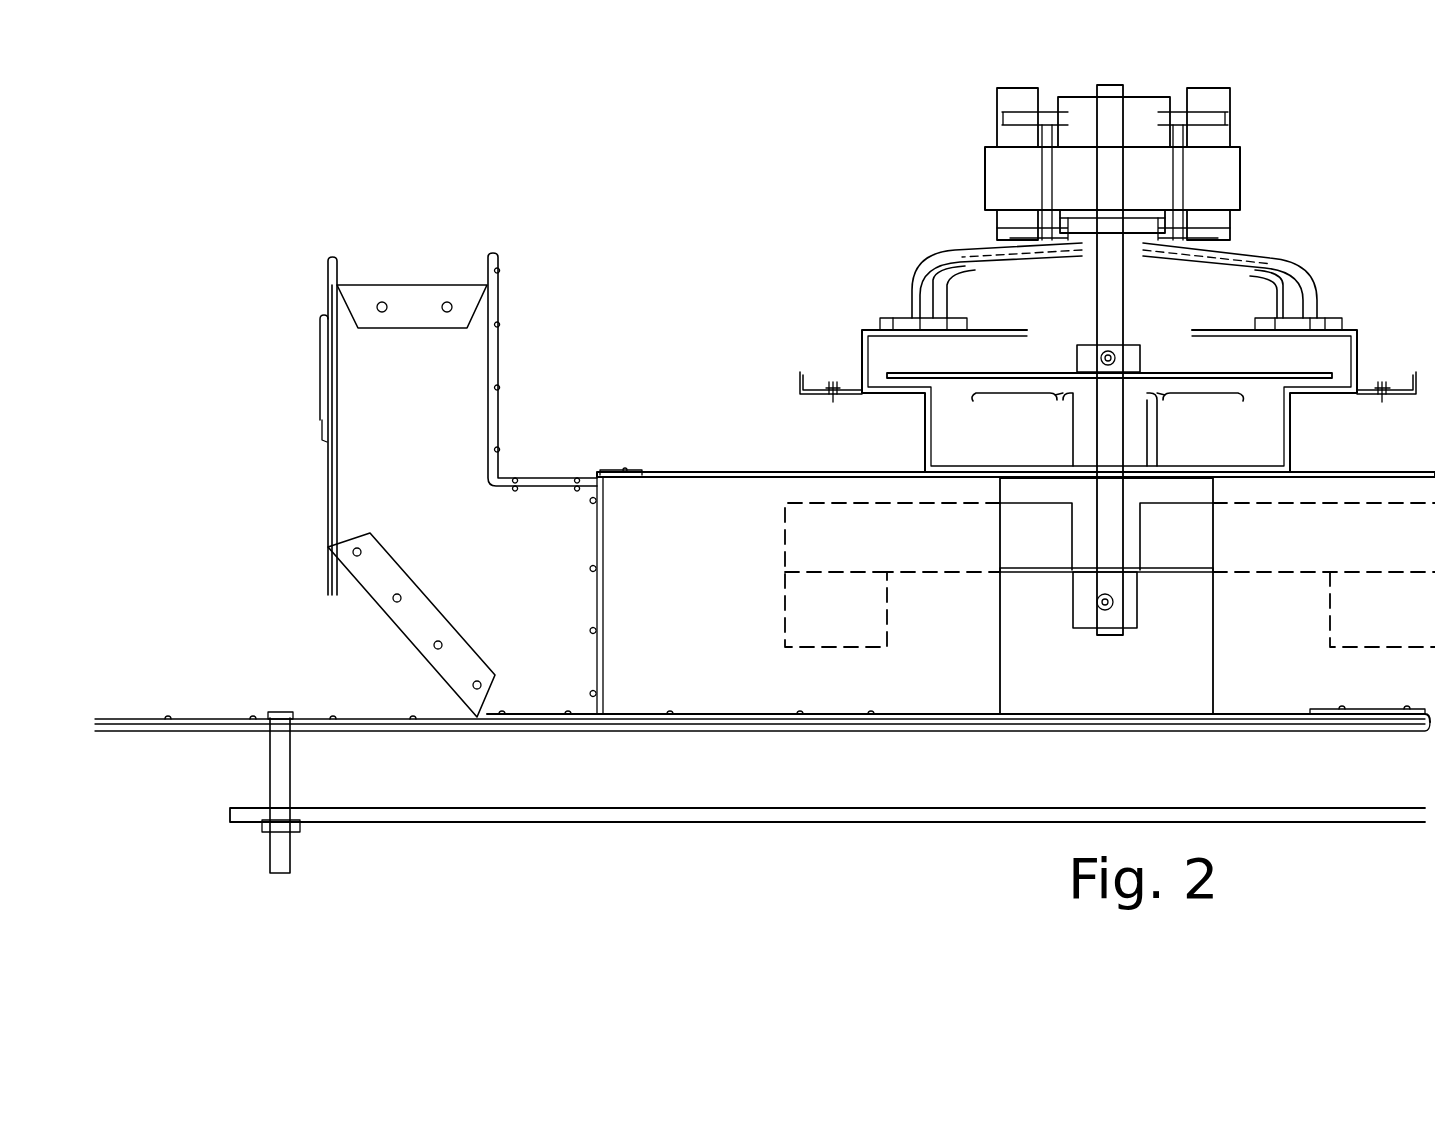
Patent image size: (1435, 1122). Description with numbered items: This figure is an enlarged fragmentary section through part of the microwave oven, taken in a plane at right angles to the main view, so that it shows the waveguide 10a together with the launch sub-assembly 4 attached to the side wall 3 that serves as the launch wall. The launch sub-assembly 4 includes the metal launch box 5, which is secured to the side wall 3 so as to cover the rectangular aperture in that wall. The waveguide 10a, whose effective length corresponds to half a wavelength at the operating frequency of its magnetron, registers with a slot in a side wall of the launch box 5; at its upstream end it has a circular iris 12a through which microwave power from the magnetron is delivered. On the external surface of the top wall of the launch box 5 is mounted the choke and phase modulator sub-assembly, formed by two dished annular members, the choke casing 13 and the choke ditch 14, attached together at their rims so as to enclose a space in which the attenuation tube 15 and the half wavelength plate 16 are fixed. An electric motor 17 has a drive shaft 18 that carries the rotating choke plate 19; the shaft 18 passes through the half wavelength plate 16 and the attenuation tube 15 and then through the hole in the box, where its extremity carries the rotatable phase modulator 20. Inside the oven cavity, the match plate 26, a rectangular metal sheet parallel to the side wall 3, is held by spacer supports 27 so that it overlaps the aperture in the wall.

The side wall 3 is at (155, 717).
The launch sub-assembly 4 is at (923, 233).
The launch box 5 is at (713, 488).
The waveguide 10a is at (500, 350).
The circular iris 12a is at (320, 400).
The choke casing 13 is at (1358, 342).
The choke ditch 14 is at (1295, 433).
The attenuation tube 15 is at (1132, 432).
The half wavelength plate 16 is at (1018, 395).
The electric motor 17 is at (1230, 183).
The drive shaft 18 is at (1112, 300).
The rotating choke plate 19 is at (937, 358).
The rotatable phase modulator 20 is at (795, 540).
The match plate 26 is at (680, 822).
The spacer supports 27 is at (278, 770).